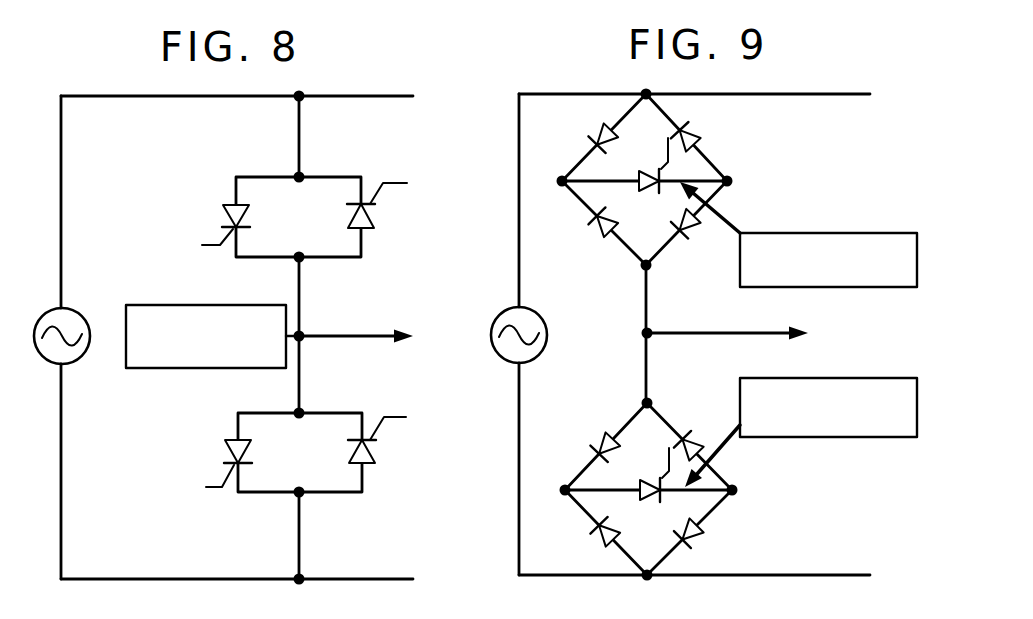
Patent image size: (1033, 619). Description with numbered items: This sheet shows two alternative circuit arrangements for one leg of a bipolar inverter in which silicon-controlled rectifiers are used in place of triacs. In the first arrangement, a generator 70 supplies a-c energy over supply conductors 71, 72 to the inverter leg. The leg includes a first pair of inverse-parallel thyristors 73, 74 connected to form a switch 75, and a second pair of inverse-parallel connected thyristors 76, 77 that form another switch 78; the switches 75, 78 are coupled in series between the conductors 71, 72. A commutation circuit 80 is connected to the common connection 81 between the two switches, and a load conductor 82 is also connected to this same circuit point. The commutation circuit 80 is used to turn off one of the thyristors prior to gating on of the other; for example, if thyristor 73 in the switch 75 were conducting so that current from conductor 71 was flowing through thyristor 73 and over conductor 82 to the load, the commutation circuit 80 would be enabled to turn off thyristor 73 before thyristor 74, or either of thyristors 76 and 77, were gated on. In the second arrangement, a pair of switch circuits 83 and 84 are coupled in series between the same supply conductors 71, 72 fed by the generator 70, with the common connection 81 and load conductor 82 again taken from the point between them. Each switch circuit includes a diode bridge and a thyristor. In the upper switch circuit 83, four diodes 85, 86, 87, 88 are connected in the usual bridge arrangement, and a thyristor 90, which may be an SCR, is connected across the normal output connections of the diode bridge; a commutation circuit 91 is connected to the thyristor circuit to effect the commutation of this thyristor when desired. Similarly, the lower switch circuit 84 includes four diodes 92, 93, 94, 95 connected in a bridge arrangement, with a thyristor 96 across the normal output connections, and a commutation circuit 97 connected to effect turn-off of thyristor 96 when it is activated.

In FIG. 8, the generator 70 is at (58, 324).
In FIG. 9, the generator 70 is at (517, 323).
In FIG. 8, the supply conductor 71 is at (237, 86).
In FIG. 9, the supply conductor 71 is at (694, 79).
In FIG. 8, the supply conductor 72 is at (237, 593).
In FIG. 9, the supply conductor 72 is at (694, 591).
In FIG. 8, the thyristor 73 is at (216, 225).
In FIG. 8, the thyristor 74 is at (379, 208).
In FIG. 8, the switch 75 is at (318, 228).
In FIG. 8, the thyristor 76 is at (217, 462).
In FIG. 8, the thyristor 77 is at (380, 445).
In FIG. 8, the switch 78 is at (320, 464).
In FIG. 8, the commutation circuit 80 is at (212, 324).
In FIG. 8, the common connection 81 is at (303, 341).
In FIG. 9, the common connection 81 is at (644, 333).
In FIG. 8, the load conductor 82 is at (382, 330).
In FIG. 9, the load conductor 82 is at (687, 333).
In FIG. 9, the switch circuit 83 is at (553, 196).
In FIG. 9, the switch circuit 84 is at (562, 505).
In FIG. 9, the diode 85 is at (593, 130).
In FIG. 9, the diode 86 is at (697, 234).
In FIG. 9, the diode 87 is at (593, 231).
In FIG. 9, the diode 88 is at (697, 130).
In FIG. 9, the thyristor 90 is at (648, 165).
In FIG. 9, the commutation circuit 91 is at (798, 234).
In FIG. 9, the diode 92 is at (595, 442).
In FIG. 9, the diode 93 is at (706, 537).
In FIG. 9, the diode 94 is at (594, 539).
In FIG. 9, the diode 95 is at (699, 434).
In FIG. 9, the thyristor 96 is at (651, 489).
In FIG. 9, the commutation circuit 97 is at (801, 420).